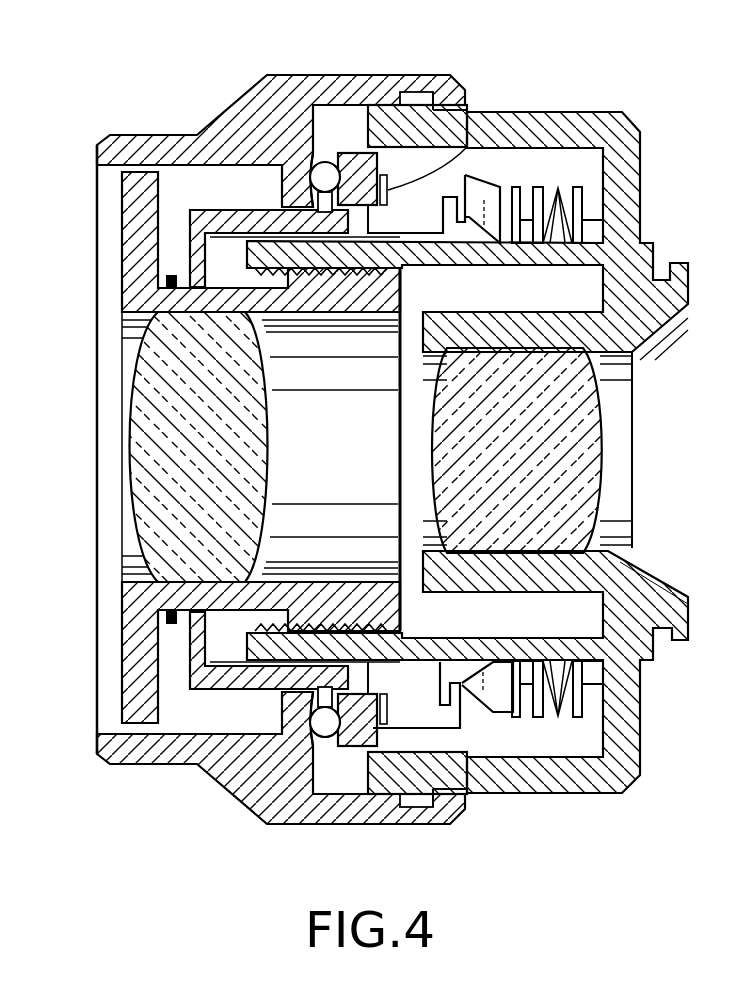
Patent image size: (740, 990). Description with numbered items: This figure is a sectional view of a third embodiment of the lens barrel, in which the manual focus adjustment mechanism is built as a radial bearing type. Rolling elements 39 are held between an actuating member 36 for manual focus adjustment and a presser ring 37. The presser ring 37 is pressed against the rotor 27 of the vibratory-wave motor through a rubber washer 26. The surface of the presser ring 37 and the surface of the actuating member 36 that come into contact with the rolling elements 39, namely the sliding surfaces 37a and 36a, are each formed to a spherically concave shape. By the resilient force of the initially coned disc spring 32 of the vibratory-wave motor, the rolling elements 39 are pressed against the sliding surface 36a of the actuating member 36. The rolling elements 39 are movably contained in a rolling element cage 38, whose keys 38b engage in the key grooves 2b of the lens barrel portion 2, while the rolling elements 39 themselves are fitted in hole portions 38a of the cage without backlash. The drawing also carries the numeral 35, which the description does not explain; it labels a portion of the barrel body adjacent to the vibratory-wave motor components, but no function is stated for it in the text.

The lens barrel portion 2 is at (127, 633).
The key grooves 2b is at (177, 287).
The rubber washer 26 is at (452, 165).
The rotor 27 is at (500, 150).
The initially coned disc spring 32 is at (557, 192).
The rear body 35 is at (562, 120).
The actuating member for manual focus adjustment 36 is at (238, 108).
The sliding surface 36a is at (316, 152).
The presser ring 37 is at (398, 128).
The sliding surface 37a is at (393, 128).
The rolling element cage 38 is at (226, 214).
The hole portions 38a is at (347, 153).
The keys 38b is at (168, 232).
The rolling elements 39 is at (306, 180).